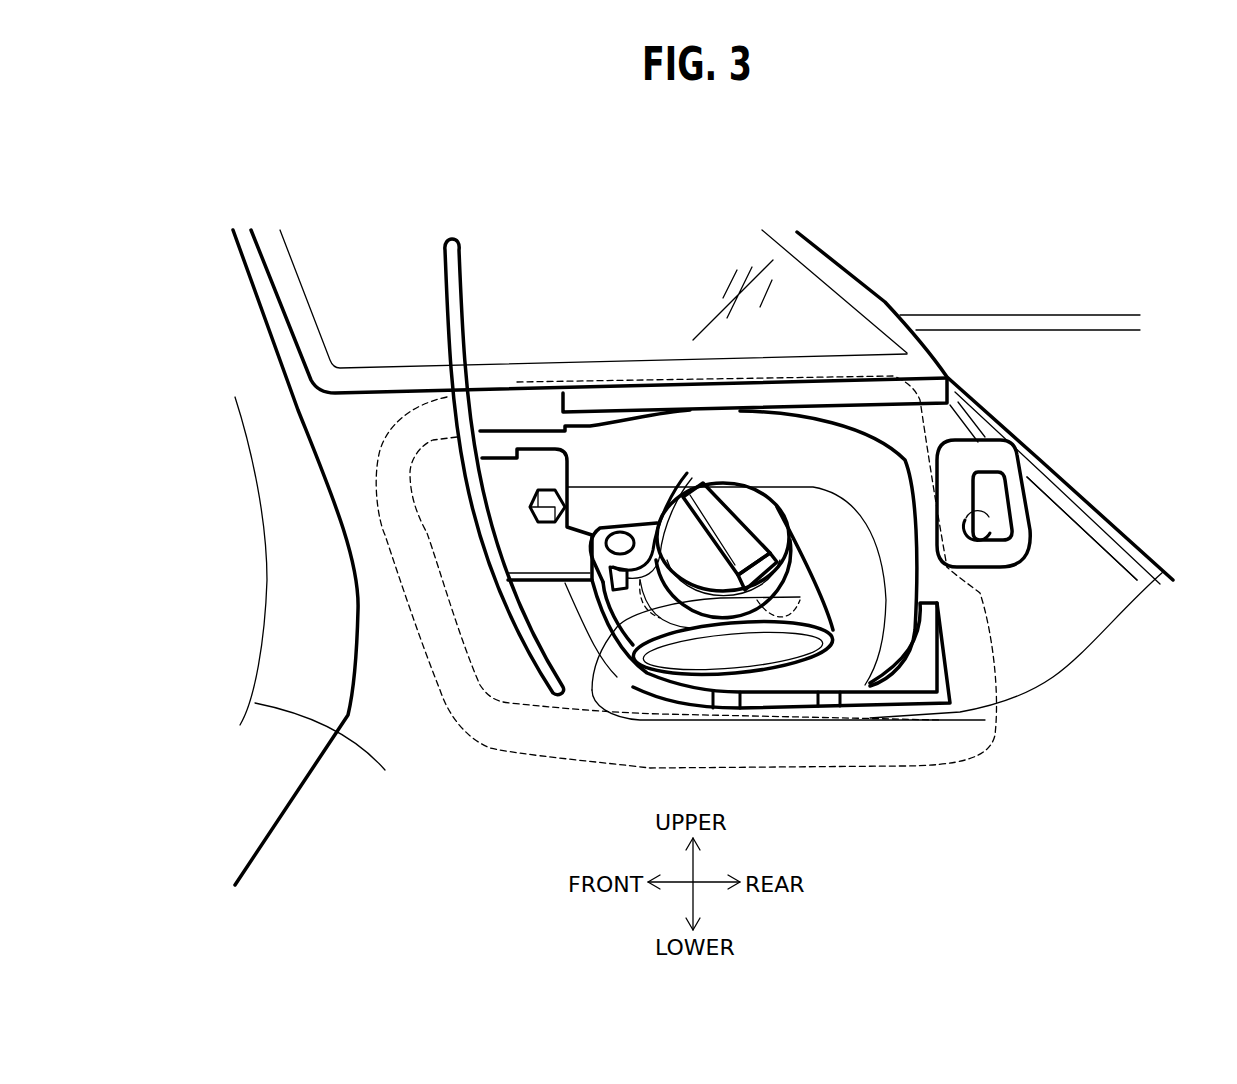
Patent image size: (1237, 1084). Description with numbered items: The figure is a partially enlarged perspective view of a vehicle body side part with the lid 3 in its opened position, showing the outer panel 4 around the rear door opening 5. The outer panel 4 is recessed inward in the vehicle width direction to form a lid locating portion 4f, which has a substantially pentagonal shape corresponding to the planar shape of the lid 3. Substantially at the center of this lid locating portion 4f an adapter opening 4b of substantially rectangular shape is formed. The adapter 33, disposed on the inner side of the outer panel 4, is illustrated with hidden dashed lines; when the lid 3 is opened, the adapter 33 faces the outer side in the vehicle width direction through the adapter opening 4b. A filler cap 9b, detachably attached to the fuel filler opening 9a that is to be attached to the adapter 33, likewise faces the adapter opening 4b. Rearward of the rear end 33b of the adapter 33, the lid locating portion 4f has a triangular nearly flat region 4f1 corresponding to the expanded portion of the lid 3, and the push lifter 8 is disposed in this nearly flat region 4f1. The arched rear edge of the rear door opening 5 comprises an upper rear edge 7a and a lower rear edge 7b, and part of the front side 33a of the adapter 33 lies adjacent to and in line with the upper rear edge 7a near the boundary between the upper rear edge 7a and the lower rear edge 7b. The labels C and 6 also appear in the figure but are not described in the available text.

The vehicle cabin C is at (940, 213).
The lid 3 is at (447, 287).
The outer panel 4 is at (255, 703).
The adapter opening 4b is at (885, 462).
The lid locating portion 4f is at (1070, 662).
The nearly flat region 4f1 is at (1063, 552).
The rear door opening 5 is at (233, 322).
The bracket 6 is at (540, 468).
The upper rear edge 7a is at (288, 368).
The lower rear edge 7b is at (282, 811).
The push lifter 8 is at (988, 473).
The fuel filler opening 9a is at (592, 690).
The filler cap 9b is at (723, 492).
The adapter 33 is at (820, 747).
The front side of the adapter 33a is at (390, 532).
The rear end of the adapter 33b is at (985, 621).